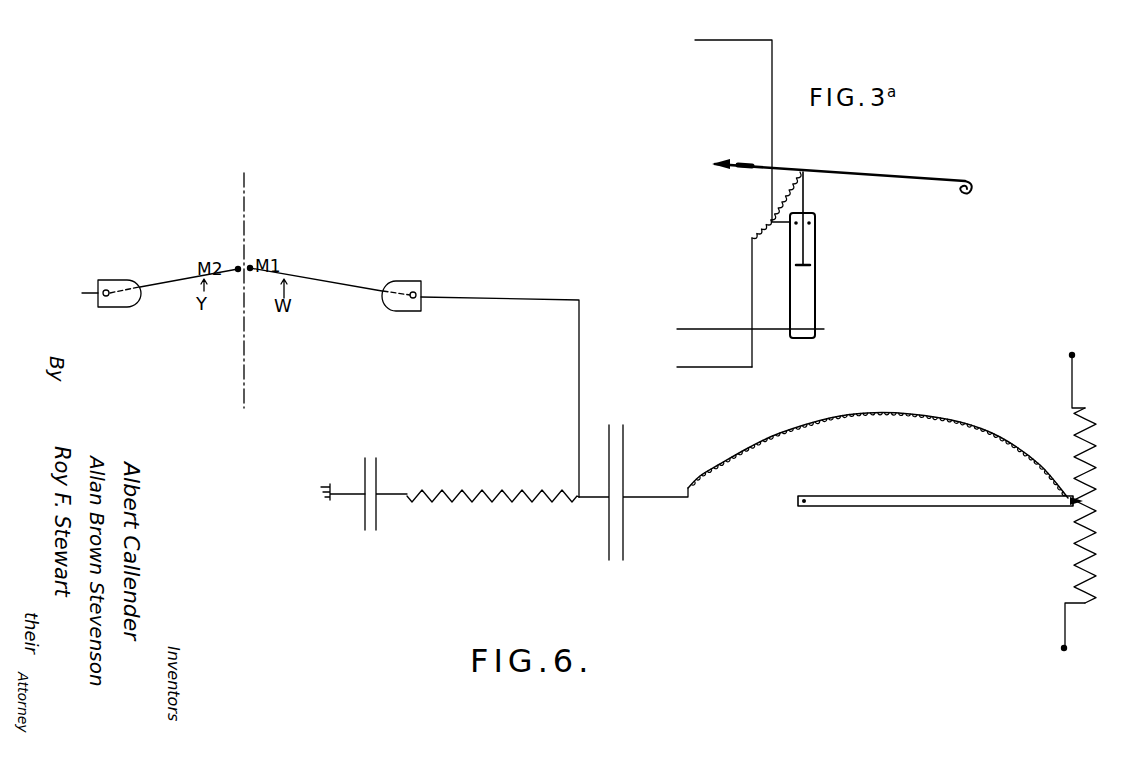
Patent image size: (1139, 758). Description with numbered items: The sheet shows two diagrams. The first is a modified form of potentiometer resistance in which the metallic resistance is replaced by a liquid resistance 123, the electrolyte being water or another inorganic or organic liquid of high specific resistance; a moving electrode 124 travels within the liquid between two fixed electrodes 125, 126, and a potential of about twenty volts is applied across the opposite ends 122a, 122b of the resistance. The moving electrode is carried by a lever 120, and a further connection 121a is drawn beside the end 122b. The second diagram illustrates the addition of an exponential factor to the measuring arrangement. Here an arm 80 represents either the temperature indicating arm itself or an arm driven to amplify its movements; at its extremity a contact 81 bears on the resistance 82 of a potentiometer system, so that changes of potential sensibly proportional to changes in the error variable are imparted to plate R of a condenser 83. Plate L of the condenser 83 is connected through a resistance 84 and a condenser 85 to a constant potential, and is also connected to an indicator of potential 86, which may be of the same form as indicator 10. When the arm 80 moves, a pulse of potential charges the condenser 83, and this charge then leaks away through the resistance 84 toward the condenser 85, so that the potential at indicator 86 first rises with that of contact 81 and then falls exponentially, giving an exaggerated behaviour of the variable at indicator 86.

In FIG. 6, the indicator 10 is at (106, 288).
In FIG. 6, the arm 80 is at (880, 471).
In FIG. 6, the contact 81 is at (1064, 515).
In FIG. 6, the resistance 82 is at (1093, 501).
In FIG. 6, the condenser 83 is at (633, 509).
In FIG. 6, the resistance 84 is at (493, 508).
In FIG. 6, the condenser 85 is at (386, 506).
In FIG. 6, the indicator of potential 86 is at (480, 383).
In FIG. 3A, the lever 120 is at (842, 173).
In FIG. 3A, the pipe connection 121a is at (698, 350).
In FIG. 3A, the end of resistance 122a is at (712, 43).
In FIG. 3A, the end of resistance 122b is at (698, 325).
In FIG. 3A, the liquid resistance 123 is at (816, 297).
In FIG. 3A, the moving electrode 124 is at (816, 262).
In FIG. 3A, the fixed electrode 125 is at (816, 223).
In FIG. 3A, the fixed electrode 126 is at (824, 331).